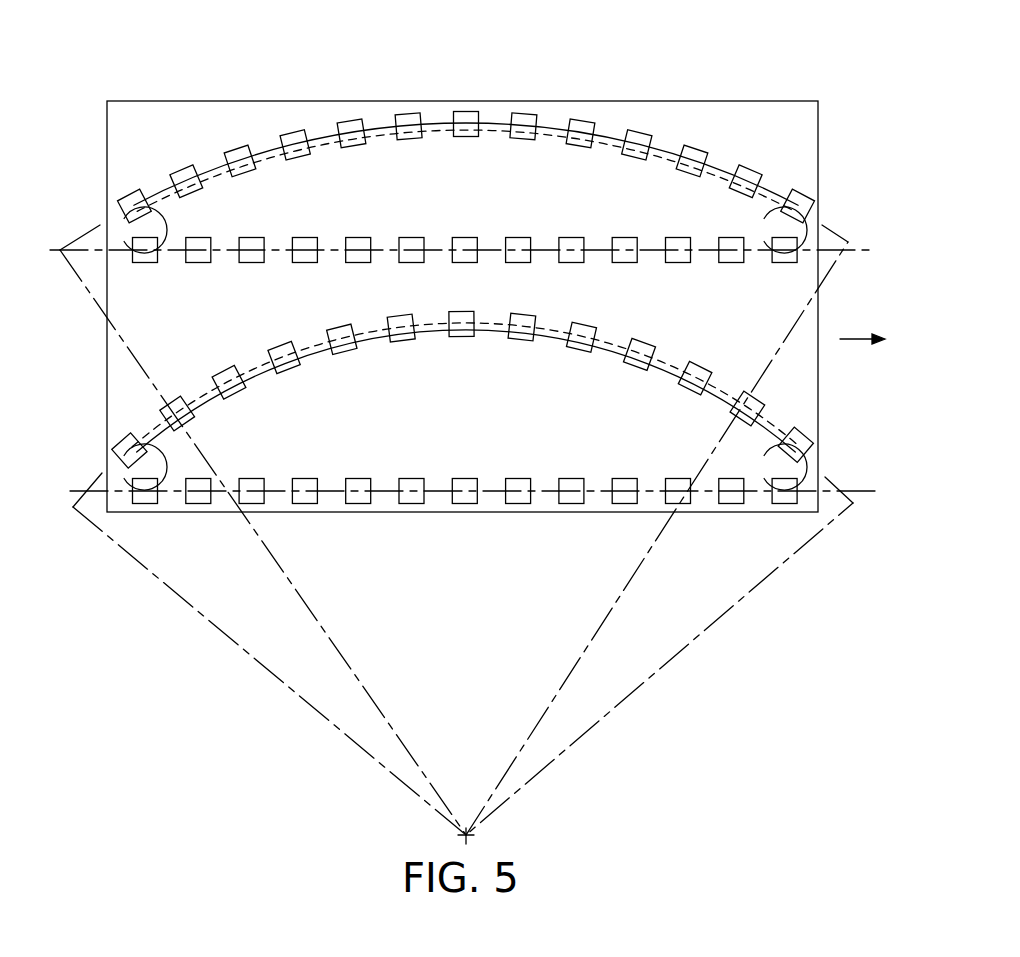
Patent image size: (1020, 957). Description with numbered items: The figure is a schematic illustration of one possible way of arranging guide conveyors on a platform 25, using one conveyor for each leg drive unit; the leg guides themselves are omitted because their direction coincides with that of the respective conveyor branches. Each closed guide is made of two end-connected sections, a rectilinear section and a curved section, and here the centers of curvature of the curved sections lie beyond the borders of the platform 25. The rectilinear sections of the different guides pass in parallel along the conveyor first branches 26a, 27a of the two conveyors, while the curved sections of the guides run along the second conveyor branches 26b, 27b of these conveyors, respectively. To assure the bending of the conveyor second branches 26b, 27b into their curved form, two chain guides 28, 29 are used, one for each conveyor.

The platform 25 is at (122, 118).
The conveyor first branch 26a is at (337, 250).
The conveyor second branch 26b is at (490, 125).
The conveyor first branch 27a is at (160, 503).
The conveyor second branch 27b is at (323, 342).
The chain guide 28 is at (600, 140).
The chain guide 29 is at (360, 337).